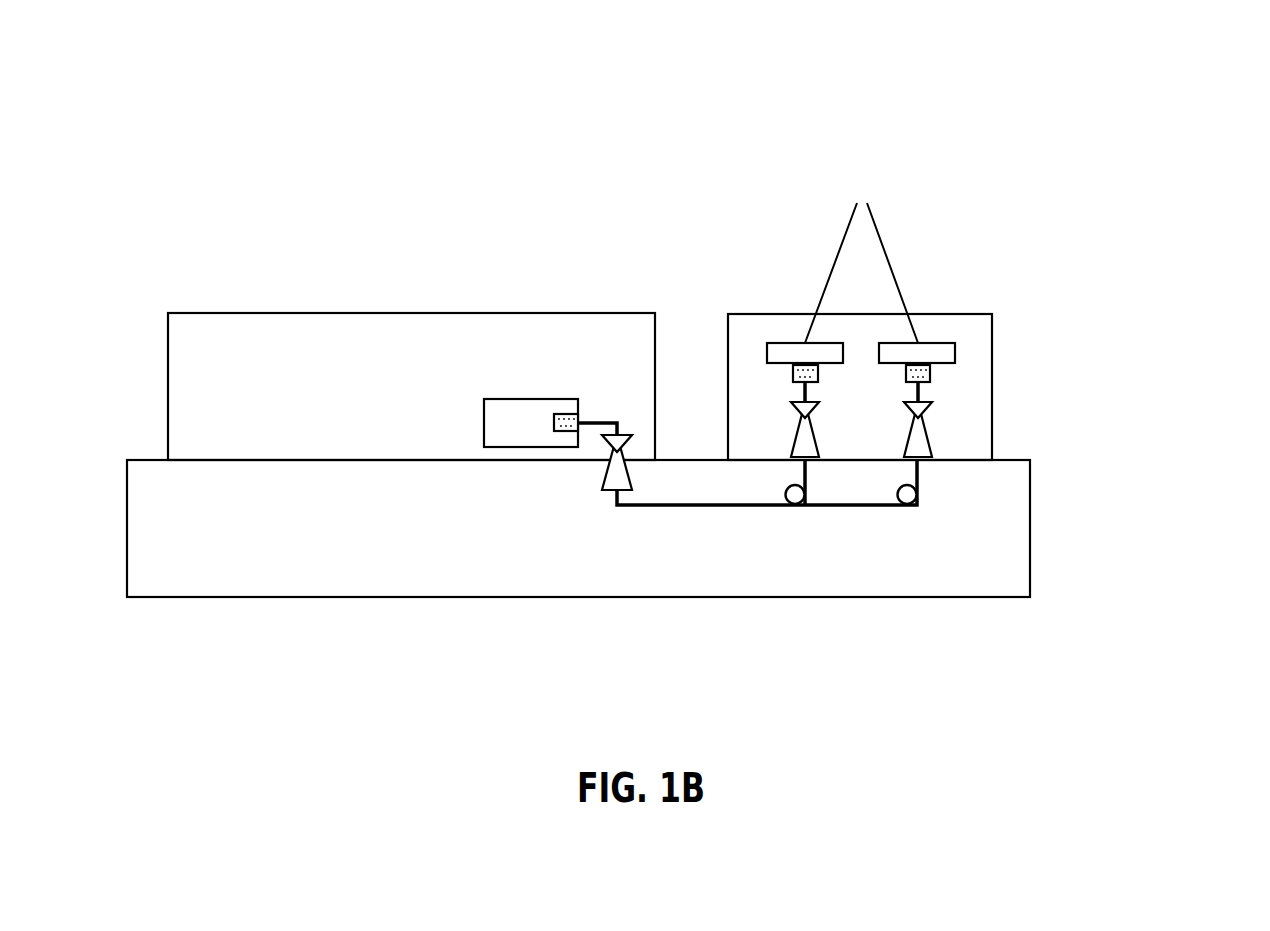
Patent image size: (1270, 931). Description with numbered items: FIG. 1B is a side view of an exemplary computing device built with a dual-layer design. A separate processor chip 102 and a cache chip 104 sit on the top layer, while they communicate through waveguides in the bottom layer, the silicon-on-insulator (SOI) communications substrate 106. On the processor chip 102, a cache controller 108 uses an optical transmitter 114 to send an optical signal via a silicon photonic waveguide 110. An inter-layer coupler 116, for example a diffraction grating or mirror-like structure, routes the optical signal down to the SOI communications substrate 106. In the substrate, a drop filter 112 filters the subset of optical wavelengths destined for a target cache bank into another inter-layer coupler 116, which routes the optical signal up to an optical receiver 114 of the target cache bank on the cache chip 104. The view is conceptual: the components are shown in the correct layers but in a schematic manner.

The processor chip 102 is at (411, 386).
The cache chip 104 is at (996, 311).
The SOI communications substrate 106 is at (578, 528).
The cache controller 108 is at (506, 394).
The silicon photonic waveguide 110 is at (803, 467).
The drop filter 112 is at (908, 512).
The optical transmitter/receiver 114 is at (1040, 400).
The inter-layer coupler 116 is at (790, 410).